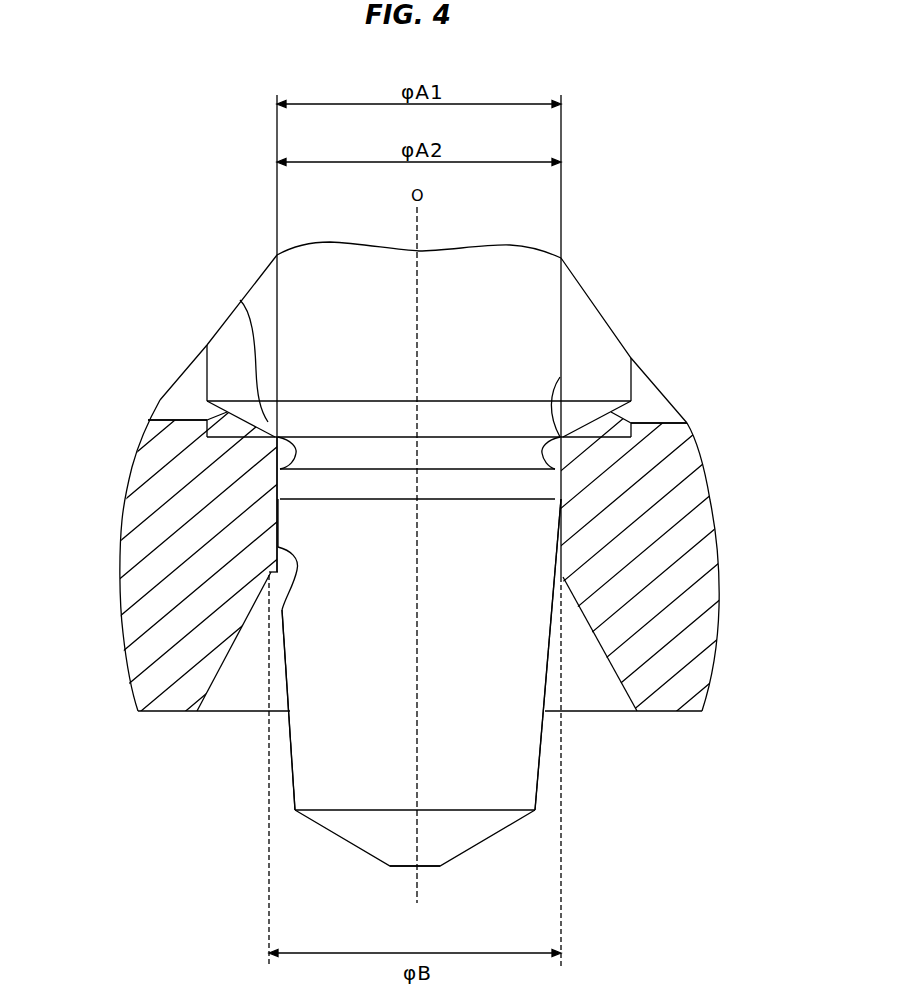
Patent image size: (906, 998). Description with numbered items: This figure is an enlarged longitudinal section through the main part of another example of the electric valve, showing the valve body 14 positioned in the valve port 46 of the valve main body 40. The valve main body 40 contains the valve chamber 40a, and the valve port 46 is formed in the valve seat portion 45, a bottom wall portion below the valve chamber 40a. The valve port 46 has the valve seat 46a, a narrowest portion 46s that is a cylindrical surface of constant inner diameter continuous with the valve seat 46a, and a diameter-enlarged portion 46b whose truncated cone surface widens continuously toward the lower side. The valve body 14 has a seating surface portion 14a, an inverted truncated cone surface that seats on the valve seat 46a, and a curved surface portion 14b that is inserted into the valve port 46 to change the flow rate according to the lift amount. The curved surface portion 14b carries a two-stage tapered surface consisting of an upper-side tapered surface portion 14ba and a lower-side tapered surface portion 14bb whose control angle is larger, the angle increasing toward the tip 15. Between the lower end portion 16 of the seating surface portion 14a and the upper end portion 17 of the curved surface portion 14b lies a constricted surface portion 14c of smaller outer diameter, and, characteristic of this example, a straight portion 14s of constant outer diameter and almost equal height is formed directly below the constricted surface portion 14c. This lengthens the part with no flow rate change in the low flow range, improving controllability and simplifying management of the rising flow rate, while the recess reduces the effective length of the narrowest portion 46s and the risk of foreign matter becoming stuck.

The valve body 14 is at (541, 800).
The seating surface portion 14a is at (563, 436).
The curved surface portion 14b is at (421, 654).
The upper-side tapered surface portion 14ba is at (545, 765).
The lower-side tapered surface portion 14bb is at (480, 847).
The constricted surface portion 14c is at (563, 453).
The straight portion 14s is at (567, 490).
The tip 15 is at (383, 880).
The lower end portion of the seating surface portion 16 is at (240, 300).
The upper end portion of the curved surface portion 17 is at (270, 503).
The valve main body 40 is at (180, 420).
The valve chamber 40a is at (185, 390).
The valve seat portion 45 is at (143, 549).
The valve port 46 is at (271, 572).
The valve seat 46a is at (560, 377).
The diameter-enlarged portion 46b is at (605, 673).
The narrowest portion 46s is at (283, 578).